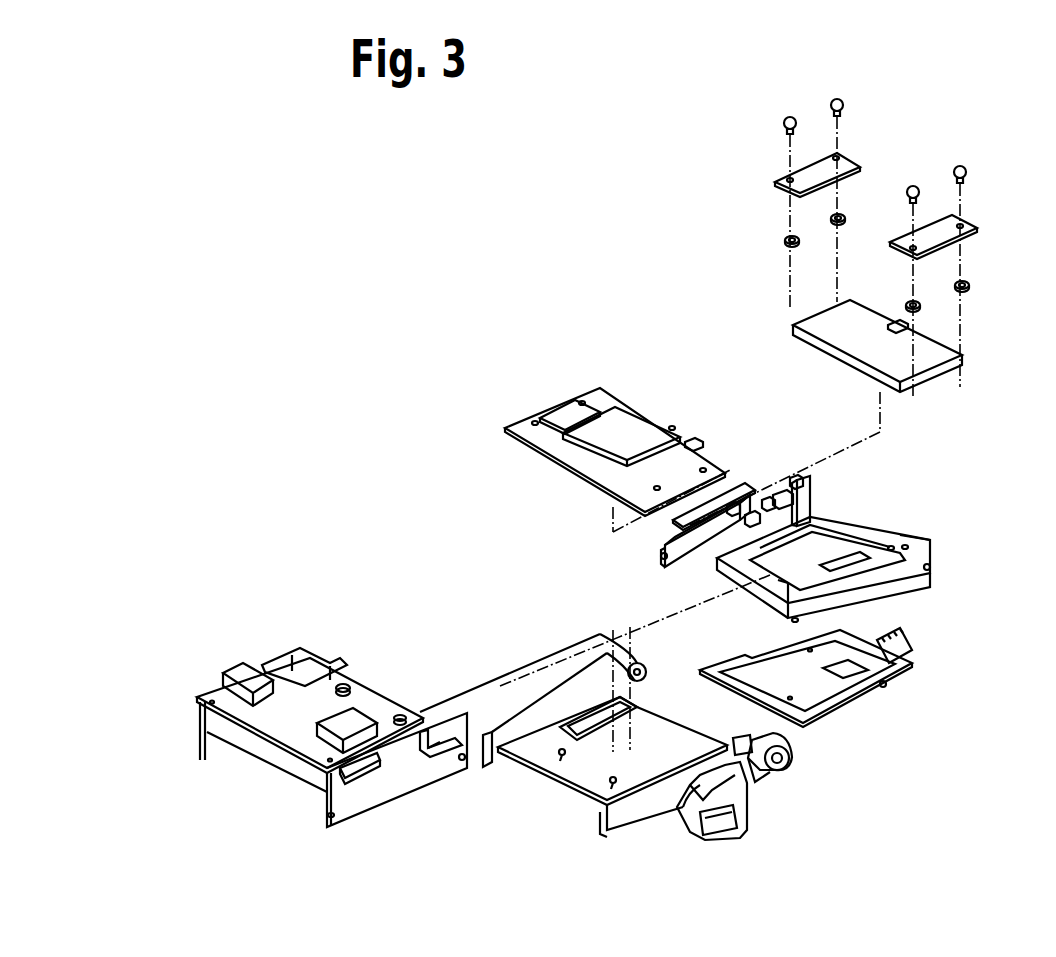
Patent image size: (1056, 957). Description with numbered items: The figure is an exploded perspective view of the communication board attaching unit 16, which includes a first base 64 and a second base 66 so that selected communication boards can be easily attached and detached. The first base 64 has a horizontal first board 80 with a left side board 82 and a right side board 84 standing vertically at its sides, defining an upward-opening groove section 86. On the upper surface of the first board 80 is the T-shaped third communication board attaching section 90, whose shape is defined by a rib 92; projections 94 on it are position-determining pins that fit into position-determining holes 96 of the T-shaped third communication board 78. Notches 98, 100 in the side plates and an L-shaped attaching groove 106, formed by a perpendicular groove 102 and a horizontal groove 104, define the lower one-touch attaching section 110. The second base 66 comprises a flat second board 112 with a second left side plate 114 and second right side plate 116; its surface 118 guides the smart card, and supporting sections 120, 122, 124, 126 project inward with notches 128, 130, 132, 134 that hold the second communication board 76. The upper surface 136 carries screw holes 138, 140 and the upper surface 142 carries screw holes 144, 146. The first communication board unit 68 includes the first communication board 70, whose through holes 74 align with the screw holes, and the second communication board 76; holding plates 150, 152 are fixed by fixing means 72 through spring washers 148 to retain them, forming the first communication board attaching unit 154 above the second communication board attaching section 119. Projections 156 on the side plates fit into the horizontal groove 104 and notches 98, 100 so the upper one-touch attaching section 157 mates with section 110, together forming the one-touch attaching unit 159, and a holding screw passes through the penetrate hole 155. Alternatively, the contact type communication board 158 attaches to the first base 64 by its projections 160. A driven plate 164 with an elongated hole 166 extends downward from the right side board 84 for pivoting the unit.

The communication board attaching unit 16 is at (592, 197).
The first base 64 is at (610, 862).
The second base 66 is at (965, 630).
The first communication board unit 68 is at (587, 322).
The first communication board 70 is at (505, 428).
The fixing means 72 is at (790, 117).
The through holes 74 is at (535, 421).
The second communication board 76 is at (851, 301).
The third communication board 78 is at (850, 702).
The first board 80 is at (598, 790).
The left side board 82 is at (540, 712).
The right side board 84 is at (623, 817).
The groove section 86 is at (568, 725).
The third communication board attaching section 90 is at (643, 733).
The rib 92 is at (577, 715).
The projections 94 is at (560, 757).
The position-determining holes 96 is at (748, 694).
The notch 98 is at (478, 735).
The notch 100 is at (603, 813).
The perpendicular groove 102 is at (767, 787).
The horizontal groove 104 is at (788, 768).
The L-shaped attaching groove 106 is at (890, 832).
The one-touch attaching section 110 is at (439, 620).
The second board 112 is at (888, 482).
The second left side plate 114 is at (690, 566).
The second right side plate 116 is at (935, 580).
The surface 118 is at (818, 546).
The second communication board attaching section 119 is at (972, 507).
The supporting section 120 is at (688, 512).
The supporting section 122 is at (798, 478).
The supporting section 124 is at (786, 597).
The supporting section 126 is at (906, 546).
The notch 128 is at (748, 516).
The notch 130 is at (792, 497).
The notch 132 is at (860, 560).
The notch 134 is at (893, 545).
The upper surface 136 is at (765, 503).
The screw hole 138 is at (730, 506).
The screw hole 140 is at (795, 481).
The upper surface 142 is at (928, 548).
The screw hole 144 is at (895, 655).
The screw hole 146 is at (925, 543).
The spring washers 148 is at (830, 218).
The holding plate 150 is at (780, 181).
The holding plate 152 is at (973, 230).
The first communication board attaching unit 154 is at (733, 322).
The penetrate hole 155 is at (607, 640).
The projections 156 is at (660, 556).
The upper one-touch attaching section 157 is at (530, 540).
The contact type communication board 158 is at (282, 655).
The one-touch attaching unit 159 is at (412, 530).
The projections 160 is at (203, 757).
The driven plate 164 is at (717, 838).
The elongated hole 166 is at (740, 832).